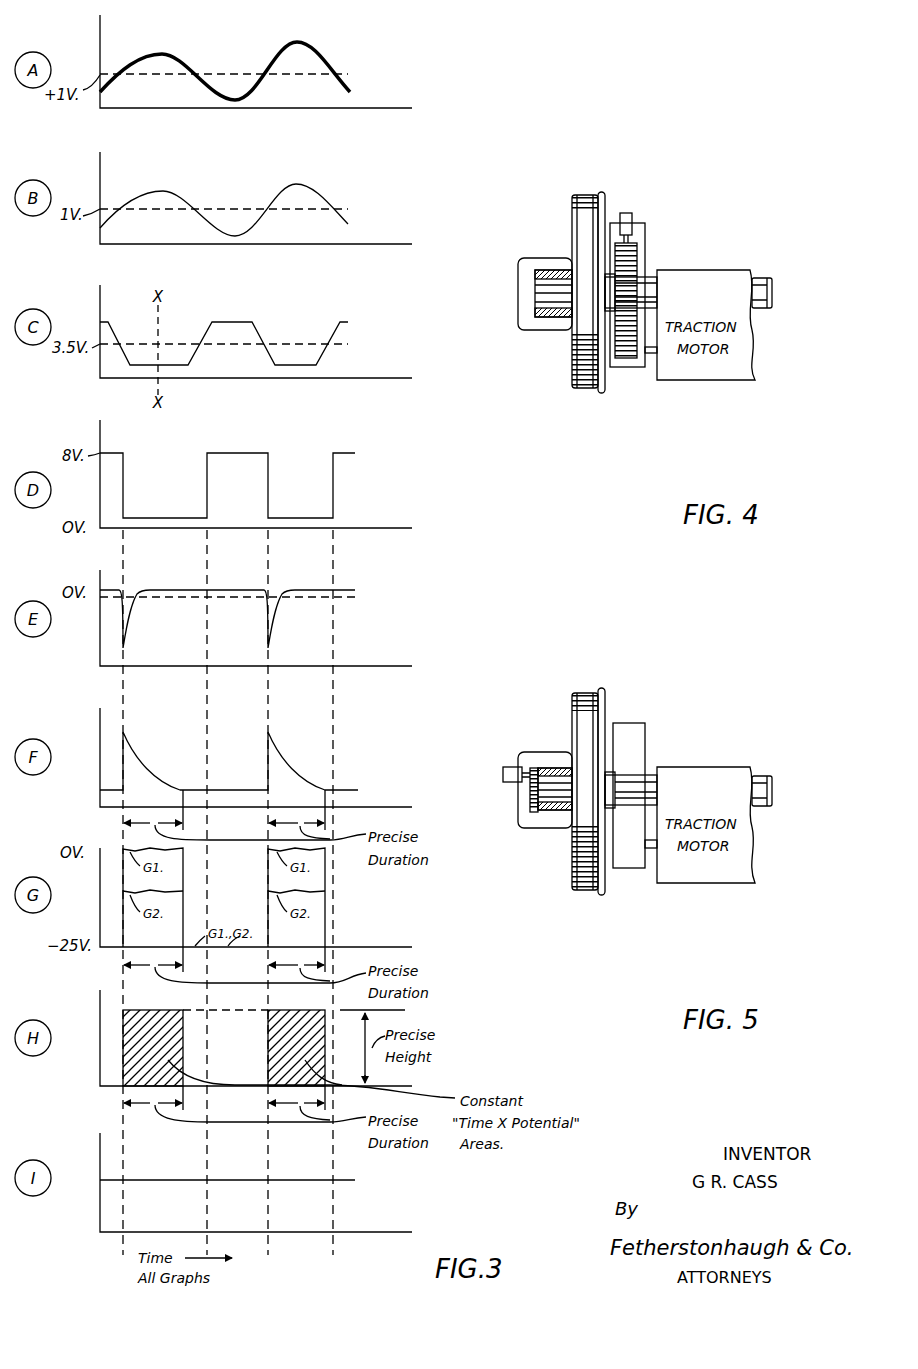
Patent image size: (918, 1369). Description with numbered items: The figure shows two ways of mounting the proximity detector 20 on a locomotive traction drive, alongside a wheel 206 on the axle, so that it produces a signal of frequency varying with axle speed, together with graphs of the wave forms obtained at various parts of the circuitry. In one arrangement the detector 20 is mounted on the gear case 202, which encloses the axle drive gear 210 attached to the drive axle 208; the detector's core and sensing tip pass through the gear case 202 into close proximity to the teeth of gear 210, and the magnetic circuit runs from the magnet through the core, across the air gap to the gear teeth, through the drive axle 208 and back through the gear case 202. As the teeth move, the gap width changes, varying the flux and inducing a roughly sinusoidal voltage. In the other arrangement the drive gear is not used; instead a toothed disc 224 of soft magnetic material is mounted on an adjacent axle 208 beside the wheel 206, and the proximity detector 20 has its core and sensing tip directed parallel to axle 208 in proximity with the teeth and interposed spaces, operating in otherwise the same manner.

In FIG. 4, the proximity detector 20 is at (628, 213).
In FIG. 5, the proximity detector 20 is at (503, 773).
In FIG. 4, the gear case 202 is at (645, 232).
In FIG. 5, the gear case 202 is at (645, 740).
In FIG. 4, the flywheel 206 is at (603, 192).
In FIG. 5, the flywheel 206 is at (603, 690).
In FIG. 4, the drive axle 208 is at (535, 293).
In FIG. 5, the drive axle 208 is at (547, 805).
In FIG. 4, the axle drive gear 210 is at (637, 260).
In FIG. 5, the toothed disc 224 is at (530, 802).